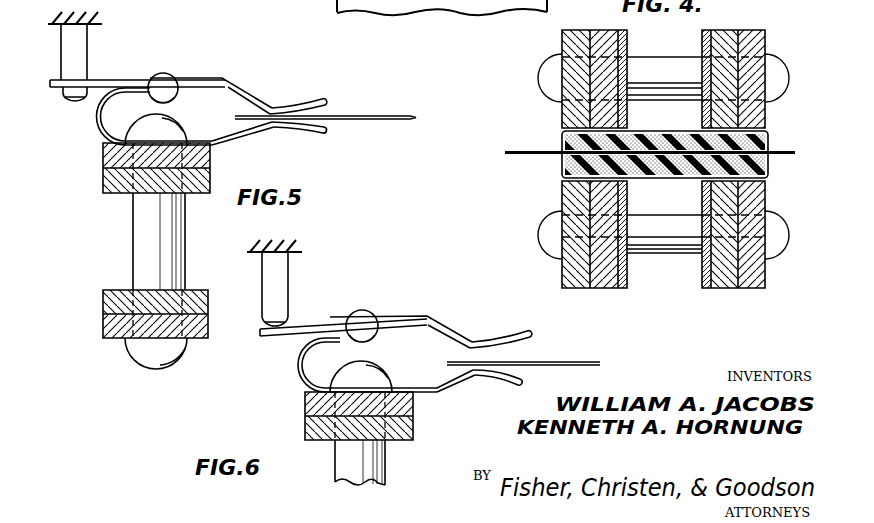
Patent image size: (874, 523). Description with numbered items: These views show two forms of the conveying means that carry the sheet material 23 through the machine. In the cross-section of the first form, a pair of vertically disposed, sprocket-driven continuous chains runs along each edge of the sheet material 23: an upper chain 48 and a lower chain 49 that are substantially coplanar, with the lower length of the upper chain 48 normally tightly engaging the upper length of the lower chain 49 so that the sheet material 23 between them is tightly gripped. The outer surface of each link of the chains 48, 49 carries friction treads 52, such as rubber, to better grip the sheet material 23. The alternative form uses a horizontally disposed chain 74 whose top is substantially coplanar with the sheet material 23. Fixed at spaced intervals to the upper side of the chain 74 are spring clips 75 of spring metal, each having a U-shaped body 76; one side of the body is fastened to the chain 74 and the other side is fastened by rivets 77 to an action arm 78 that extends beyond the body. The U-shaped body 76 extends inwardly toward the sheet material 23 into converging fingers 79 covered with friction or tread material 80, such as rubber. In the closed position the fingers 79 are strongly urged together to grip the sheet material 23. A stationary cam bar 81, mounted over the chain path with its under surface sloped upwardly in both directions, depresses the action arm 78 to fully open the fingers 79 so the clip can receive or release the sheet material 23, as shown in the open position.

In FIG. 5, the sheet material 23 is at (376, 115).
In FIG. 6, the sheet material 23 is at (562, 361).
In FIG. 4, the sheet material 23 is at (516, 151).
In FIG. 4, the upper chain 48 is at (660, 50).
In FIG. 4, the lower chain 49 is at (660, 260).
In FIG. 4, the friction treads 52 is at (565, 140).
In FIG. 5, the chain 74 is at (128, 236).
In FIG. 6, the chain 74 is at (300, 417).
In FIG. 5, the spring clips 75 is at (205, 72).
In FIG. 6, the spring clips 75 is at (405, 310).
In FIG. 5, the U-shaped body 76 is at (97, 127).
In FIG. 6, the U-shaped body 76 is at (300, 412).
In FIG. 5, the rivets 77 is at (163, 75).
In FIG. 6, the rivets 77 is at (362, 316).
In FIG. 5, the action arm 78 is at (114, 80).
In FIG. 6, the action arm 78 is at (311, 327).
In FIG. 5, the converging fingers 79 is at (253, 100).
In FIG. 6, the converging fingers 79 is at (443, 330).
In FIG. 5, the friction or tread material 80 is at (295, 107).
In FIG. 6, the friction or tread material 80 is at (495, 339).
In FIG. 5, the cam bar 81 is at (88, 45).
In FIG. 6, the cam bar 81 is at (289, 273).